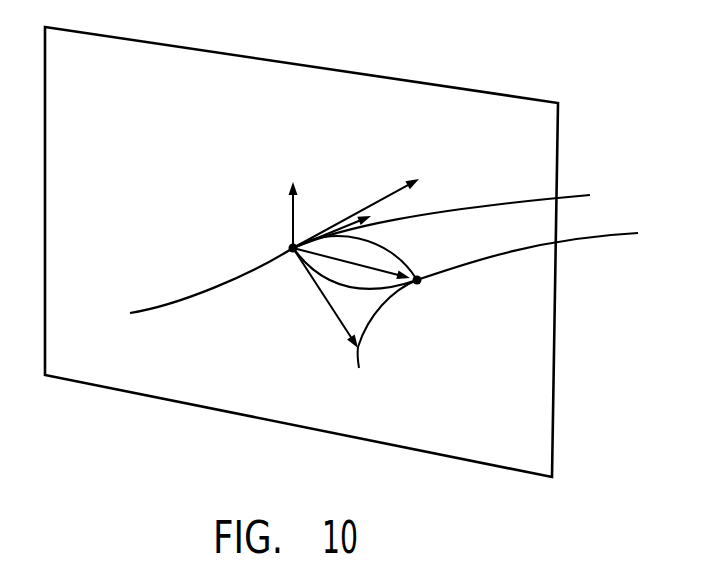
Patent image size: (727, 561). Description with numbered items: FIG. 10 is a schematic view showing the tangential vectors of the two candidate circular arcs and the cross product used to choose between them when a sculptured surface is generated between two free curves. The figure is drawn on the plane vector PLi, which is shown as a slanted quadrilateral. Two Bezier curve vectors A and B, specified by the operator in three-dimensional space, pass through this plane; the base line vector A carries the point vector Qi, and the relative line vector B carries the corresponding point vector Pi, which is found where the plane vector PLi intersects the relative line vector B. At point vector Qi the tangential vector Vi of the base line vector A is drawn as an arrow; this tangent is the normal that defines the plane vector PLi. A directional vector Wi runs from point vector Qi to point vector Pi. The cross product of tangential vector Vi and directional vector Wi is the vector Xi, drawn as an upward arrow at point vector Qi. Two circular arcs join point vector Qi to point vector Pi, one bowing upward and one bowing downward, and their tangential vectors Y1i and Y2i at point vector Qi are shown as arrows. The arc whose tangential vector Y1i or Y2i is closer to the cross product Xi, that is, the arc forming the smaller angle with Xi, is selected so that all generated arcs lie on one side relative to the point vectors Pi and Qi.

The plane vector PLi is at (515, 100).
The Bezier curve vector A is at (578, 194).
The Bezier curve vector B is at (586, 238).
The point vector Qi is at (289, 256).
The point vector Pi is at (420, 283).
The cross product vector Xi is at (289, 213).
The tangential vector Vi is at (343, 221).
The tangential vector Y2i is at (386, 192).
The tangential vector Y1i is at (316, 284).
The directional vector Wi is at (389, 285).